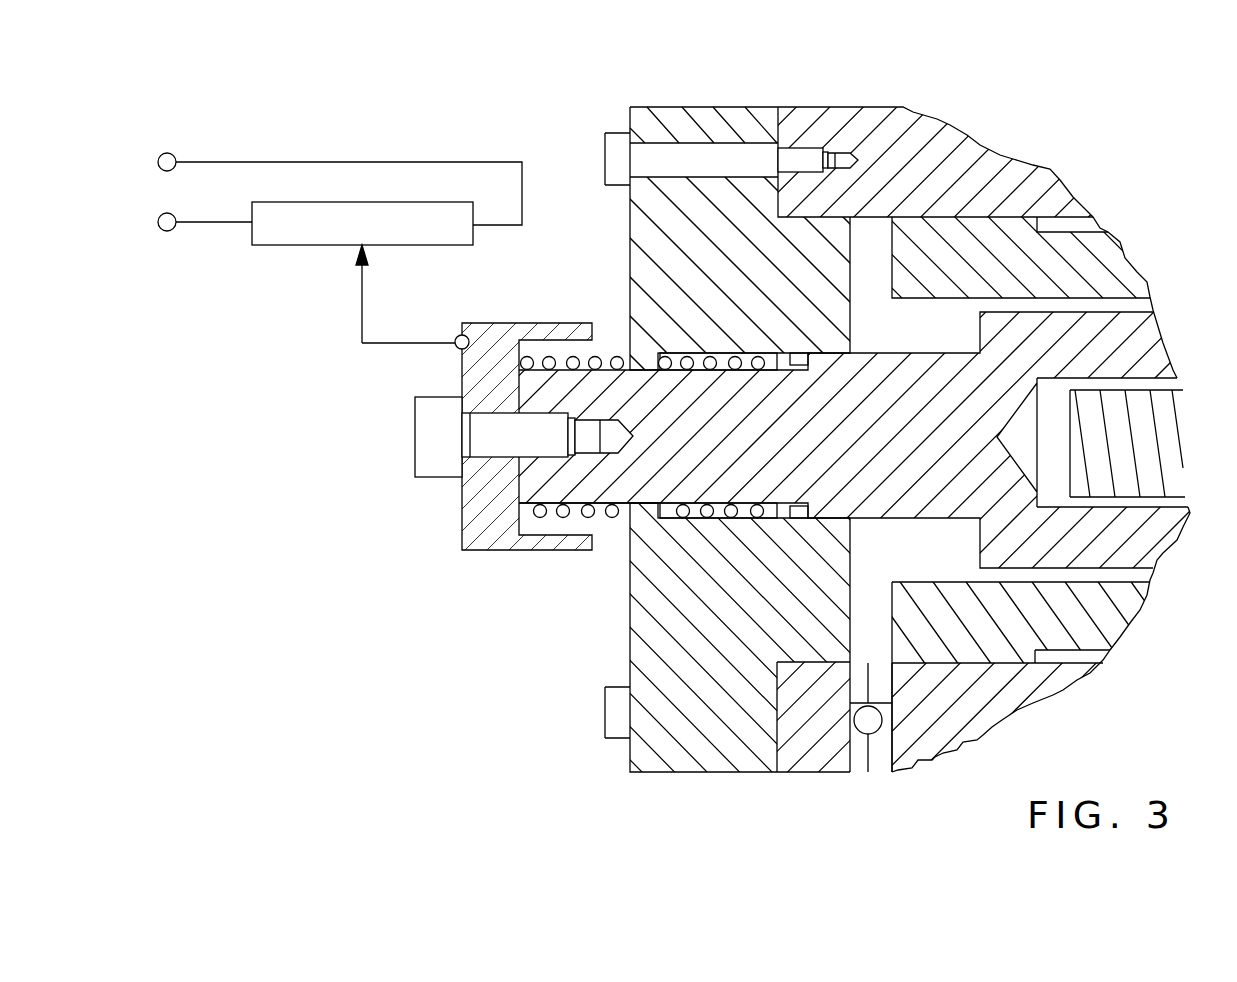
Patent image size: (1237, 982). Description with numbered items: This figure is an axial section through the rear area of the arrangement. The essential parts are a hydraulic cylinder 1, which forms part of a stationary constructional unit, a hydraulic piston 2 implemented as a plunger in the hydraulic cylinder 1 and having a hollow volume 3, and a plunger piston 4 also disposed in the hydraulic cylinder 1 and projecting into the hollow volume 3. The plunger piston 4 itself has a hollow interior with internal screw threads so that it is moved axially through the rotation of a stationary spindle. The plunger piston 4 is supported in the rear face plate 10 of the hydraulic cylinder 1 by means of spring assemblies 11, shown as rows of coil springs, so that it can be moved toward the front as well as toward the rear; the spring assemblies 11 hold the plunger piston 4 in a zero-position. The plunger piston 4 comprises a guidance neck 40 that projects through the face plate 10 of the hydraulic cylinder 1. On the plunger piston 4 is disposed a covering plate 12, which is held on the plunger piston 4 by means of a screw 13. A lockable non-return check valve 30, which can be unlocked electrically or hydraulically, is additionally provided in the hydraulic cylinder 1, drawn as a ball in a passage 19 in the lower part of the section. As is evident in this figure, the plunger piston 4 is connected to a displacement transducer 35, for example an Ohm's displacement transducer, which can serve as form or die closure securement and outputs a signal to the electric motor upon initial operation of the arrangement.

The hydraulic cylinder 1 is at (945, 173).
The hydraulic piston 2 is at (1055, 620).
The hollow volume 3 is at (1110, 310).
The plunger piston 4 is at (1145, 537).
The rear face plate 10 is at (668, 592).
The spring assemblies 11 is at (672, 342).
The covering plate 12 is at (470, 538).
The screw 13 is at (443, 463).
The passage 19 is at (860, 577).
The lockable non-return check valve 30 is at (872, 733).
The displacement transducer 35 is at (307, 230).
The guidance neck 40 is at (528, 492).